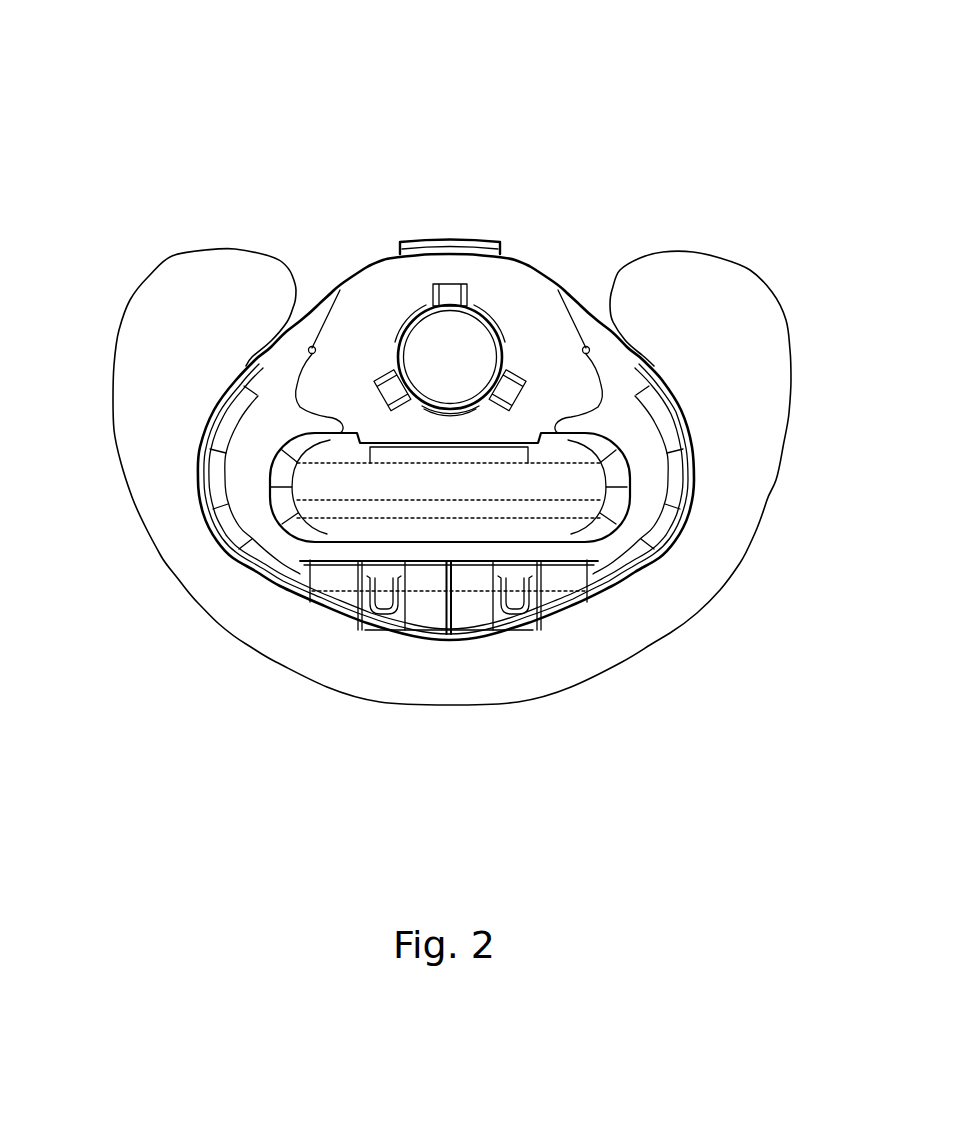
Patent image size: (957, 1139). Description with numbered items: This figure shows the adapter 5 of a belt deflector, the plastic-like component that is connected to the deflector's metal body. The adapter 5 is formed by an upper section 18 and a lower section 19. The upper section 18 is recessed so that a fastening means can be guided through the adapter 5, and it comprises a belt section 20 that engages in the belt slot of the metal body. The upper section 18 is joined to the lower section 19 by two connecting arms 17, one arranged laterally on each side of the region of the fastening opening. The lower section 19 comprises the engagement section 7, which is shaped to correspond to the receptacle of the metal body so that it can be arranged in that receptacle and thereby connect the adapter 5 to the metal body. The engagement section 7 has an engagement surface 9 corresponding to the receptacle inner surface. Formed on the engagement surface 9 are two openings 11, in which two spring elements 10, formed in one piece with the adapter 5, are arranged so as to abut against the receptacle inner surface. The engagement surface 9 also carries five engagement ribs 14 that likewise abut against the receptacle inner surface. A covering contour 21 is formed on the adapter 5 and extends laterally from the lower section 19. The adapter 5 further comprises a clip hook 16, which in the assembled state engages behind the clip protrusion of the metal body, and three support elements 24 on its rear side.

The adapter 5 is at (267, 120).
The engagement section 7 is at (477, 605).
The engagement surface 9 is at (333, 586).
The spring element 10 is at (537, 626).
The opening 11 is at (380, 604).
The engagement rib 14 is at (448, 632).
The clip hook 16 is at (472, 241).
The connecting arm 17 is at (297, 336).
The upper section 18 is at (348, 378).
The lower section 19 is at (282, 560).
The belt section 20 is at (637, 492).
The covering contour 21 is at (760, 358).
The support element 24 is at (449, 293).